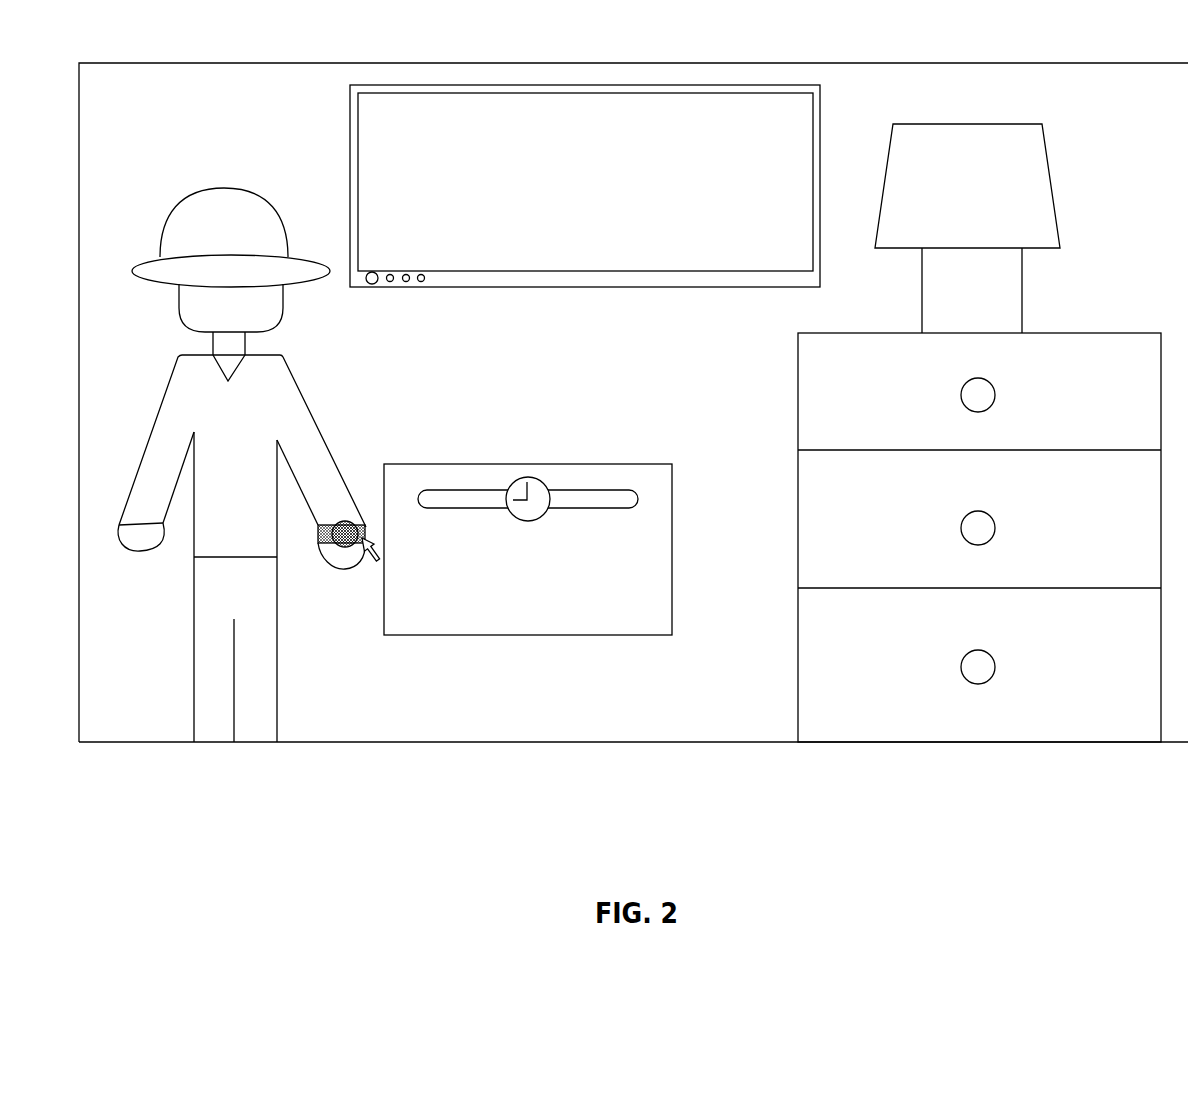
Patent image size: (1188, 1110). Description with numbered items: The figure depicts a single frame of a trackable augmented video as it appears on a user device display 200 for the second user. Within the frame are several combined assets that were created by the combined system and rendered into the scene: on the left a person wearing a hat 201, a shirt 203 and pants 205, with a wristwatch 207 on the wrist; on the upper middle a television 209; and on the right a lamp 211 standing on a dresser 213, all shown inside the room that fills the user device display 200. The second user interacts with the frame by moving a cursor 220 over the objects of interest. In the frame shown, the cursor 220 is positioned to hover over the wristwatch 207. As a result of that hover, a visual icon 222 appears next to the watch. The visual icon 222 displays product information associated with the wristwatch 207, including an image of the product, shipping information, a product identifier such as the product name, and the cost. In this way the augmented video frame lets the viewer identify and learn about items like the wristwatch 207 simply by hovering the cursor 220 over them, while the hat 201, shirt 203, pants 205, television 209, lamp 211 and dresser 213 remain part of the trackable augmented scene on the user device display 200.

The user device display 200 is at (1115, 61).
The hat 201 is at (226, 187).
The shirt 203 is at (299, 379).
The pants 205 is at (277, 648).
The wristwatch 207 is at (339, 517).
The television 209 is at (736, 85).
The lamp 211 is at (1063, 200).
The dresser 213 is at (1063, 333).
The cursor 220 is at (367, 566).
The visual icon 222 is at (561, 464).